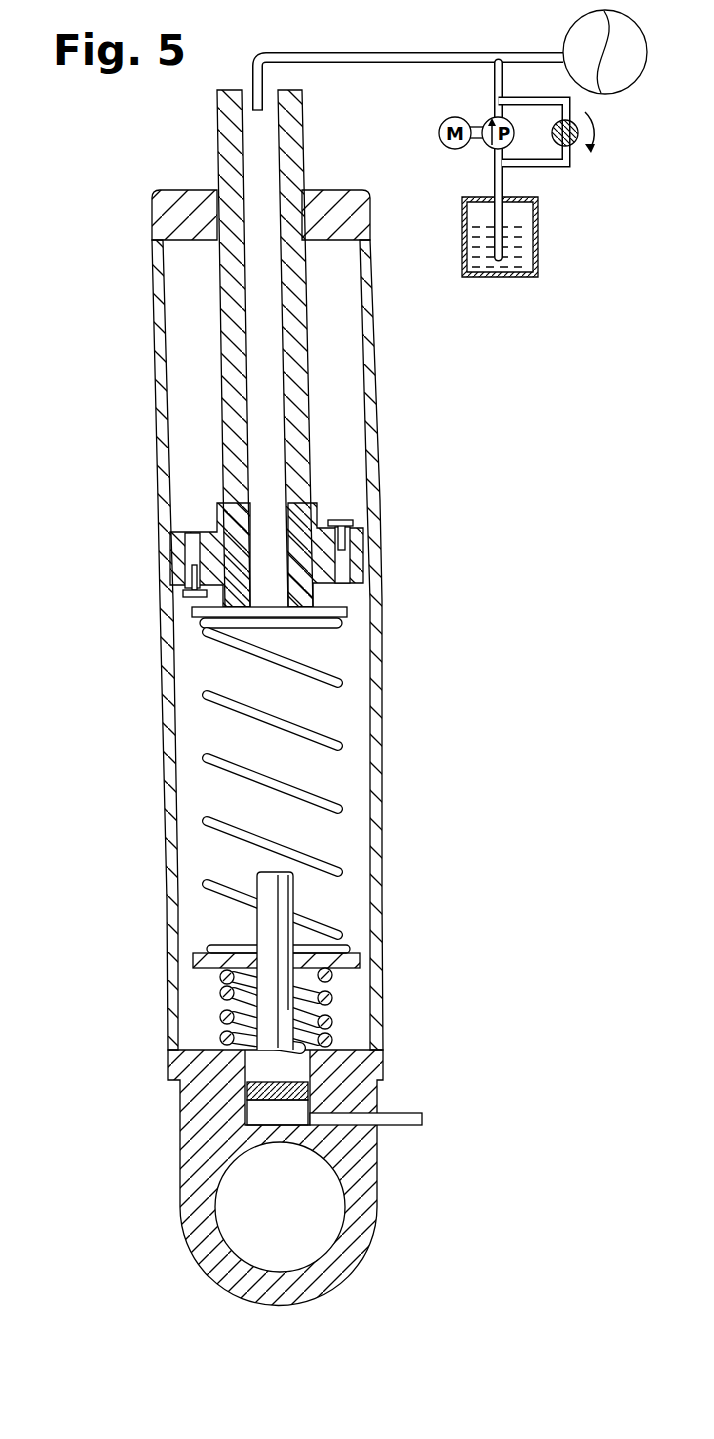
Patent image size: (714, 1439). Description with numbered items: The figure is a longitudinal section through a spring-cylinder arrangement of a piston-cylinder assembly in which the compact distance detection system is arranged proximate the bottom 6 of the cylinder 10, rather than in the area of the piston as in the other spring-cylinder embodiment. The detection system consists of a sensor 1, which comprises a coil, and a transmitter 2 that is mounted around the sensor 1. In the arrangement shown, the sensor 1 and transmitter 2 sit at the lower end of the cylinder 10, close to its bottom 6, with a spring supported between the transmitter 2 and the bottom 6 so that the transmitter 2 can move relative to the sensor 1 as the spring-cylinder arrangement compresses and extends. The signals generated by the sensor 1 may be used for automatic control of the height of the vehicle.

The sensor 1 is at (285, 926).
The transmitter 2 is at (360, 959).
The bottom 6 is at (357, 1037).
The cylinder 10 is at (382, 838).